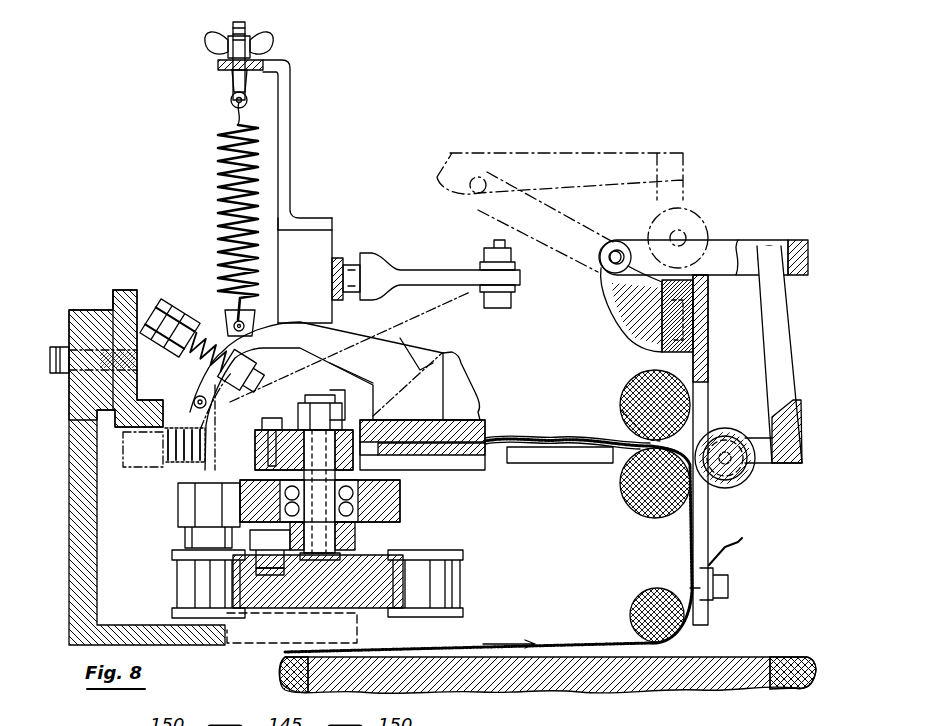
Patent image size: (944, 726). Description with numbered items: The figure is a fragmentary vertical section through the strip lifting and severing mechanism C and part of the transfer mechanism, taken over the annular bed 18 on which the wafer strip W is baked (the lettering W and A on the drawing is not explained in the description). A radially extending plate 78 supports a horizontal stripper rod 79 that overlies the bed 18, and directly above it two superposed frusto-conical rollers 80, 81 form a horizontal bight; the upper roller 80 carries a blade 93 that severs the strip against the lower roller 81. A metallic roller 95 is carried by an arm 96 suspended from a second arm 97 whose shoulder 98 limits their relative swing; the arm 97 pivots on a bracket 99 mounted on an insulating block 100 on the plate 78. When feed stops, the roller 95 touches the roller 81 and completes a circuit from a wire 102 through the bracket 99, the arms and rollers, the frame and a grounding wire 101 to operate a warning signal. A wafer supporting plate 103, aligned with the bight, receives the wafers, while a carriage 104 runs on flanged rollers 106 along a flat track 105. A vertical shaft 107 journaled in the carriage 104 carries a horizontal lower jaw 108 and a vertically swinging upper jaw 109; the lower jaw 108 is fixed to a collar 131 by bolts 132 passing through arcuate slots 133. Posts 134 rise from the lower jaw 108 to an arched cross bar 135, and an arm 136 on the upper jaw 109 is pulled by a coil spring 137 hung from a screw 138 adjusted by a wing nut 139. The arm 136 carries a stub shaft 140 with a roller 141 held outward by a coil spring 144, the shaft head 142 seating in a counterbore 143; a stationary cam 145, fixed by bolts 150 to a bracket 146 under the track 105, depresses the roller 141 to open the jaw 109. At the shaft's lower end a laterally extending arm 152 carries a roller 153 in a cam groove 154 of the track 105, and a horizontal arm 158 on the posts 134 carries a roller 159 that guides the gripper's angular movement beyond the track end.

The annular bed 18 is at (508, 703).
The radially extending plate 78 is at (708, 363).
The stripper rod 79 is at (632, 600).
The upper frusto-conical roller 80 is at (620, 396).
The lower frusto-conical roller 81 is at (636, 510).
The blade 93 is at (630, 439).
The metallic roller 95 is at (750, 480).
The arm 96 is at (788, 381).
The second arm 97 is at (722, 250).
The shoulder 98 is at (777, 266).
The bracket 99 is at (606, 296).
The insulating block 100 is at (658, 354).
The grounding wire 101 is at (744, 546).
The wire 102 is at (620, 351).
The wafer supporting plate 103 is at (582, 463).
The carriage 104 is at (356, 516).
The track 105 is at (383, 604).
The flanged rollers 106 is at (182, 582).
The vertical shaft 107 is at (328, 543).
The lower jaw 108 is at (460, 450).
The upper jaw 109 is at (488, 406).
The collar 131 is at (255, 456).
The bolts 132 is at (302, 410).
The arcuate slots 133 is at (262, 441).
The posts 134 is at (318, 245).
The arched cross bar 135 is at (292, 123).
The arm 136 is at (292, 330).
The coil spring 137 is at (218, 160).
The screw 138 is at (247, 27).
The wing nut 139 is at (205, 43).
The stub shaft 140 is at (213, 378).
The roller 141 is at (188, 303).
The head 142 is at (162, 353).
The counterbore 143 is at (180, 418).
The coil spring 144 is at (202, 328).
The stationary cam 145 is at (122, 290).
The bracket 146 is at (97, 546).
The bolts 150 is at (50, 353).
The laterally extending arm 152 is at (256, 538).
The vertically disposed roller 153 is at (284, 570).
The cam groove 154 is at (340, 568).
The horizontal laterally extending arm 158 is at (432, 268).
The roller 159 is at (490, 308).
The web W is at (583, 438).
The strip lifting and severing mechanism C is at (722, 410).
The anvil surface A is at (748, 654).